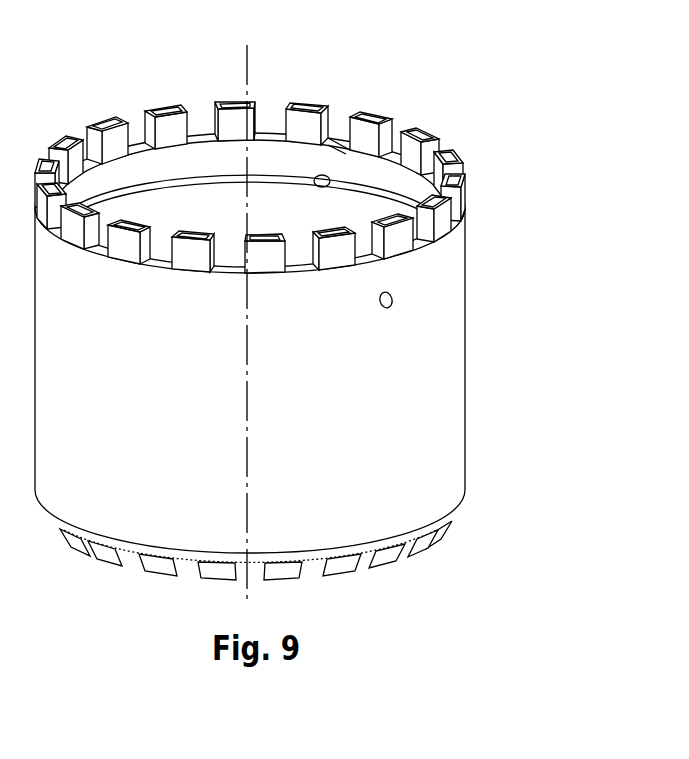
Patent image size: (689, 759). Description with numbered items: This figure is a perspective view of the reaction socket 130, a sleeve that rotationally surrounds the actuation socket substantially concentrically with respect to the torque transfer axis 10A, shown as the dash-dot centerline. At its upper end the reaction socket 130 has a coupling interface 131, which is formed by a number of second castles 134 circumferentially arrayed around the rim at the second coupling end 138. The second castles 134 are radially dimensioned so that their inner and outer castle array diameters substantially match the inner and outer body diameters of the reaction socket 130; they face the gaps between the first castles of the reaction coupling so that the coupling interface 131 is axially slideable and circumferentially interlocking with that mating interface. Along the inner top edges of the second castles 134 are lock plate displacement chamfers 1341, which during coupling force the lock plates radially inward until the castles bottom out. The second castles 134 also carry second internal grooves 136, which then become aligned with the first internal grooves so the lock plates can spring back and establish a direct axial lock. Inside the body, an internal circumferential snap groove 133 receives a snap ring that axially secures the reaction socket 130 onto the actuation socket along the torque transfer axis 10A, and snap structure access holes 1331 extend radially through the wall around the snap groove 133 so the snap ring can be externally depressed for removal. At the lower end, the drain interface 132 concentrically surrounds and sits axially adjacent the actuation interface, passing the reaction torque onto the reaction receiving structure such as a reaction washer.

The reaction socket 130 is at (515, 358).
The coupling interface 131 is at (296, 165).
The drain interface 132 is at (475, 552).
The internal circumferential snap groove 133 is at (152, 187).
The snap structure access holes 1331 is at (331, 178).
The second castles 134 is at (167, 110).
The lock plate displacement chamfers 1341 is at (302, 107).
The second internal grooves 136 is at (330, 121).
The second coupling end 138 is at (209, 64).
The torque transfer axis 10A is at (247, 68).